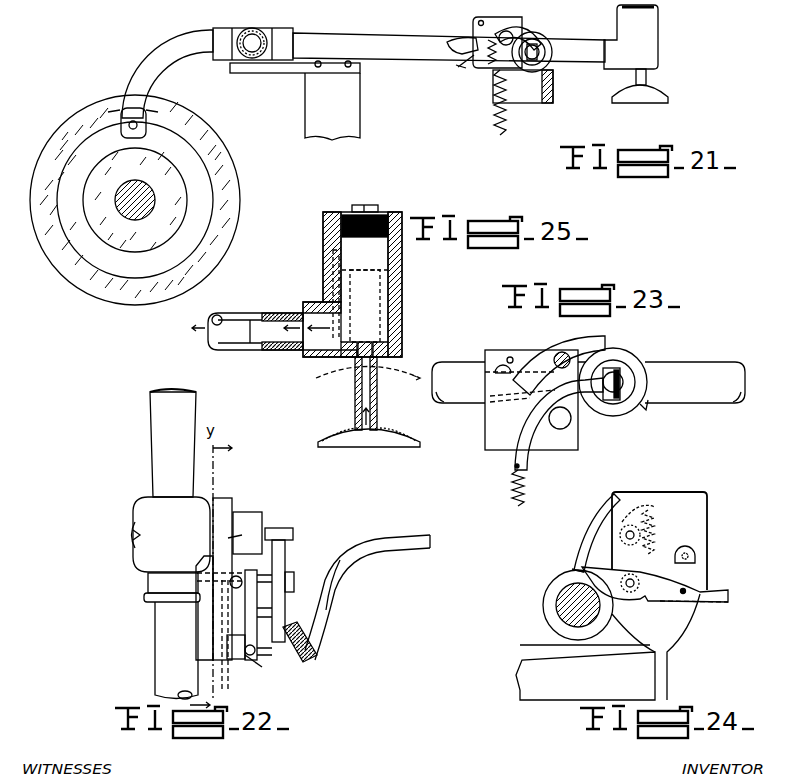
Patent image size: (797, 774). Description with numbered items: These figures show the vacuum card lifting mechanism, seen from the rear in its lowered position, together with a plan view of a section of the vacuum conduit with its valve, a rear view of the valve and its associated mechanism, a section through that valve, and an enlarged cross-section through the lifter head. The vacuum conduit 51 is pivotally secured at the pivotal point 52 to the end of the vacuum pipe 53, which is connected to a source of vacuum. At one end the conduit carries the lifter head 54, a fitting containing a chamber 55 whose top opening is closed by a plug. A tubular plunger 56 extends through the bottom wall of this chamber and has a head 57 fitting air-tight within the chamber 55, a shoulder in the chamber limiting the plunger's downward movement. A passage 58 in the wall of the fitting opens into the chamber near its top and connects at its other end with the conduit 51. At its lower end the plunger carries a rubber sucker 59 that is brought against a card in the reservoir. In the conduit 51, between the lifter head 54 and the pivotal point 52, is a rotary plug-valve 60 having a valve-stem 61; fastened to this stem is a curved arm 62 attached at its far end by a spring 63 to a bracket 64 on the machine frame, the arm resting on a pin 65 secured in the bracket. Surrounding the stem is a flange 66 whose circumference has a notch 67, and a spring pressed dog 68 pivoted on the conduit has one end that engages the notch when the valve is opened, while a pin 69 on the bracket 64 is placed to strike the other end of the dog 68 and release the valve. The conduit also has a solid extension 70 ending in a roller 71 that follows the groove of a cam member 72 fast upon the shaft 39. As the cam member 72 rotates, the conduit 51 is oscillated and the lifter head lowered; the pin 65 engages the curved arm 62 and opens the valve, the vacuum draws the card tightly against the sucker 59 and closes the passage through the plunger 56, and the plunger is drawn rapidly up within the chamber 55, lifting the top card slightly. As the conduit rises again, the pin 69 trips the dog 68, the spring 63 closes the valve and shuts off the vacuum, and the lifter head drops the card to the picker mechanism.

In FIG. 21, the shaft 39 is at (125, 205).
In FIG. 21, the vacuum conduit 51 is at (400, 44).
In FIG. 25, the vacuum conduit 51 is at (236, 318).
In FIG. 23, the vacuum conduit 51 is at (455, 366).
In FIG. 22, the vacuum conduit 51 is at (170, 654).
In FIG. 21, the pivotal point 52 is at (252, 28).
In FIG. 21, the vacuum pipe 53 is at (286, 84).
In FIG. 21, the lifter head 54 is at (650, 42).
In FIG. 25, the lifter head 54 is at (402, 300).
In FIG. 25, the chamber 55 is at (350, 251).
In FIG. 21, the tubular plunger 56 is at (646, 77).
In FIG. 25, the tubular plunger 56 is at (355, 402).
In FIG. 25, the head 57 is at (358, 345).
In FIG. 25, the passage 58 is at (333, 278).
In FIG. 21, the rubber sucker 59 is at (640, 103).
In FIG. 25, the rubber sucker 59 is at (400, 437).
In FIG. 22, the rotary plug-valve 60 is at (171, 480).
In FIG. 21, the valve-stem 61 is at (532, 64).
In FIG. 23, the valve-stem 61 is at (636, 382).
In FIG. 22, the valve-stem 61 is at (250, 515).
In FIG. 24, the valve-stem 61 is at (558, 615).
In FIG. 21, the curved arm 62 is at (495, 28).
In FIG. 23, the curved arm 62 is at (525, 436).
In FIG. 22, the curved arm 62 is at (285, 560).
In FIG. 24, the curved arm 62 is at (598, 525).
In FIG. 21, the spring 63 is at (497, 125).
In FIG. 23, the spring 63 is at (525, 486).
In FIG. 22, the spring 63 is at (300, 650).
In FIG. 24, the spring 63 is at (646, 533).
In FIG. 21, the bracket 64 is at (540, 97).
In FIG. 23, the bracket 64 is at (578, 440).
In FIG. 22, the bracket 64 is at (340, 572).
In FIG. 24, the bracket 64 is at (611, 596).
In FIG. 21, the pin 65 is at (510, 32).
In FIG. 23, the pin 65 is at (571, 418).
In FIG. 22, the pin 65 is at (294, 580).
In FIG. 21, the flange 66 is at (548, 40).
In FIG. 23, the flange 66 is at (630, 360).
In FIG. 22, the flange 66 is at (226, 508).
In FIG. 24, the flange 66 is at (555, 592).
In FIG. 21, the notch 67 is at (530, 30).
In FIG. 23, the notch 67 is at (598, 370).
In FIG. 22, the notch 67 is at (242, 536).
In FIG. 24, the notch 67 is at (574, 568).
In FIG. 21, the spring pressed dog 68 is at (458, 36).
In FIG. 23, the spring pressed dog 68 is at (555, 343).
In FIG. 22, the spring pressed dog 68 is at (220, 572).
In FIG. 24, the spring pressed dog 68 is at (650, 589).
In FIG. 23, the pin 69 is at (500, 365).
In FIG. 22, the pin 69 is at (261, 662).
In FIG. 24, the pin 69 is at (685, 546).
In FIG. 21, the solid extension 70 is at (148, 58).
In FIG. 21, the roller 71 is at (146, 130).
In FIG. 21, the cam member 72 is at (222, 205).